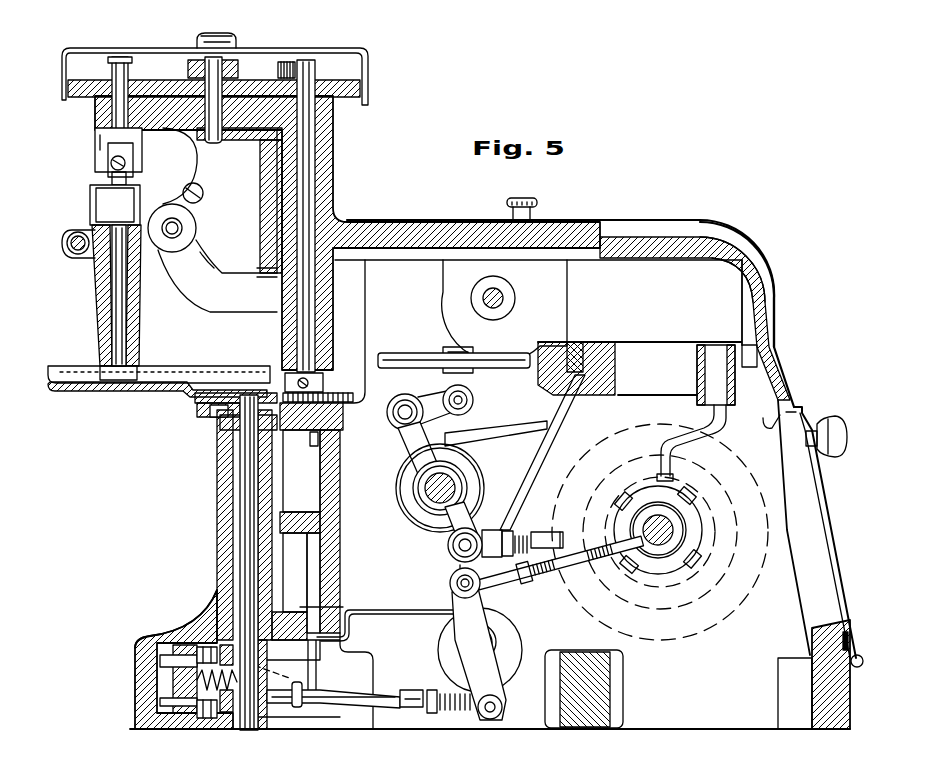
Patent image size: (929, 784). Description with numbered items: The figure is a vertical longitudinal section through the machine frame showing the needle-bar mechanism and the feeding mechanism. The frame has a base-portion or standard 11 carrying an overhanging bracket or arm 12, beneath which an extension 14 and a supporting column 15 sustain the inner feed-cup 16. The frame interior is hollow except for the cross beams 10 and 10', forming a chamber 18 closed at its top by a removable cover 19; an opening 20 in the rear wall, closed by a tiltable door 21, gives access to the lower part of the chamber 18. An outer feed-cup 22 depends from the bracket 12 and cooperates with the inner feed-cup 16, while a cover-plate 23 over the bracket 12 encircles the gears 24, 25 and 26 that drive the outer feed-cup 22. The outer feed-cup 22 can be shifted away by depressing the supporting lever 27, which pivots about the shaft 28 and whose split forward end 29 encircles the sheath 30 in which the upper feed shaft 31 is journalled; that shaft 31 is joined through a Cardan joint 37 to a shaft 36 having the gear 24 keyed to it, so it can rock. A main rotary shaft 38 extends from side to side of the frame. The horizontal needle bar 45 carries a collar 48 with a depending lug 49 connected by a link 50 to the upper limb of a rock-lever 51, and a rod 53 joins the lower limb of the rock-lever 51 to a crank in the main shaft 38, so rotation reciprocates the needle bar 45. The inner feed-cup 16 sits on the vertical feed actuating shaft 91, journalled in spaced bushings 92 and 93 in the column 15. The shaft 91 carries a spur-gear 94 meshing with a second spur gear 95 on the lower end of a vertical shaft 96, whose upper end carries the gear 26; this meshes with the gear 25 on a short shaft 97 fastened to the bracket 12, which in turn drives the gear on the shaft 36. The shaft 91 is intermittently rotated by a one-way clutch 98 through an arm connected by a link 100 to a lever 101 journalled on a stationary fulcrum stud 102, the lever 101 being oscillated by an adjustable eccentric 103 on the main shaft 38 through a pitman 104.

The cross beam 10 is at (584, 707).
The cross beam 10' is at (617, 415).
The base-portion or standard 11 is at (845, 700).
The overhanging bracket or arm 12 is at (348, 221).
The extension 14 is at (142, 641).
The supporting column 15 is at (222, 520).
The inner feed-cup 16 is at (190, 395).
The chamber 18 is at (695, 727).
The removable cover 19 is at (730, 258).
The opening 20 is at (826, 588).
The tiltable door 21 is at (833, 528).
The outer feed-cup 22 is at (48, 374).
The cover-plate 23 is at (185, 50).
The gear 24 is at (68, 83).
The gear 25 is at (250, 80).
The gear 26 is at (362, 90).
The outer feed-cup supporting lever 27 is at (233, 287).
The shaft 28 is at (172, 217).
The split forward end 29 is at (68, 243).
The sheath 30 is at (100, 273).
The upper feed shaft 31 is at (112, 316).
The shaft 36 is at (112, 115).
The Cardan joint 37 is at (90, 180).
The main rotary shaft 38 is at (690, 512).
The needle bar 45 is at (523, 370).
The collar 48 is at (446, 348).
The depending lug 49 is at (470, 398).
The link 50 is at (428, 398).
The rock-lever 51 is at (418, 444).
The rod 53 is at (545, 545).
The vertical feed actuating shaft 91 is at (247, 558).
The bushing 92 is at (232, 470).
The bushing 93 is at (230, 592).
The spur-gear 94 is at (210, 410).
The second spur gear 95 is at (348, 401).
The vertical shaft 96 is at (300, 337).
The short shaft 97 is at (208, 130).
The one-way clutch 98 is at (152, 689).
The link 100 is at (396, 696).
The lever 101 is at (500, 668).
The fulcrum stud 102 is at (472, 650).
The adjustable eccentric 103 is at (670, 562).
The pitman 104 is at (552, 570).